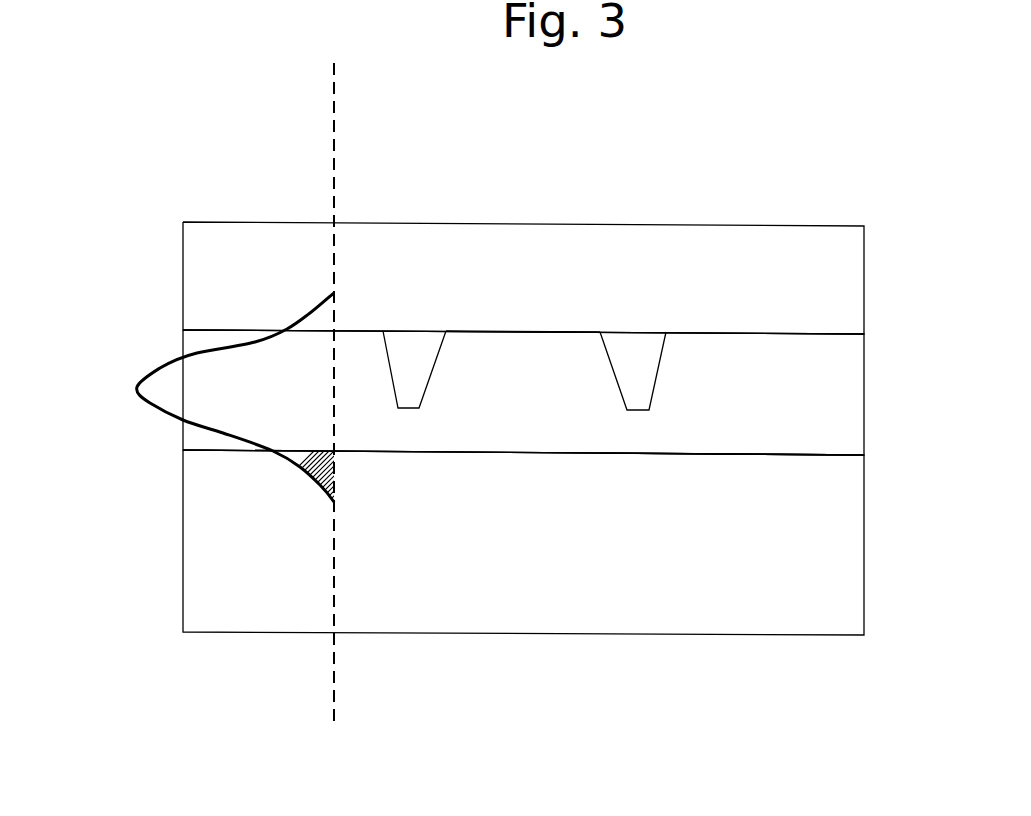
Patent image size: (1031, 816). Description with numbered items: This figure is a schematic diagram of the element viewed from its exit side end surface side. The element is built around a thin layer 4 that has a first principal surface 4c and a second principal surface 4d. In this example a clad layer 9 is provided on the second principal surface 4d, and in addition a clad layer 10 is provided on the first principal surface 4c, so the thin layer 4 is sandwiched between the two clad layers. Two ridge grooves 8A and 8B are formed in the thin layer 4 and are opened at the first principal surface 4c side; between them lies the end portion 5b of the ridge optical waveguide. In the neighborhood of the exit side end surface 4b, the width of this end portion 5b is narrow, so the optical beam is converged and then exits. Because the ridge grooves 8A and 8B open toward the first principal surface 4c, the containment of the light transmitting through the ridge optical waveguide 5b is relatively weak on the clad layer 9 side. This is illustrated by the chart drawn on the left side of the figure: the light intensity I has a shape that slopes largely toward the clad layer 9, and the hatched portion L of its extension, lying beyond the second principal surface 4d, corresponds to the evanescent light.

The clad layer 10 is at (837, 290).
The thin layer 4 is at (865, 392).
The clad layer 9 is at (838, 573).
The first principal surface 4c is at (782, 330).
The exit side end surface 4b is at (838, 412).
The second principal surface 4d is at (783, 458).
The ridge groove 8A is at (418, 353).
The ridge groove 8B is at (638, 355).
The end portion of the ridge optical waveguide 5b is at (522, 382).
The light intensity I is at (197, 353).
The hatched portion L is at (318, 467).